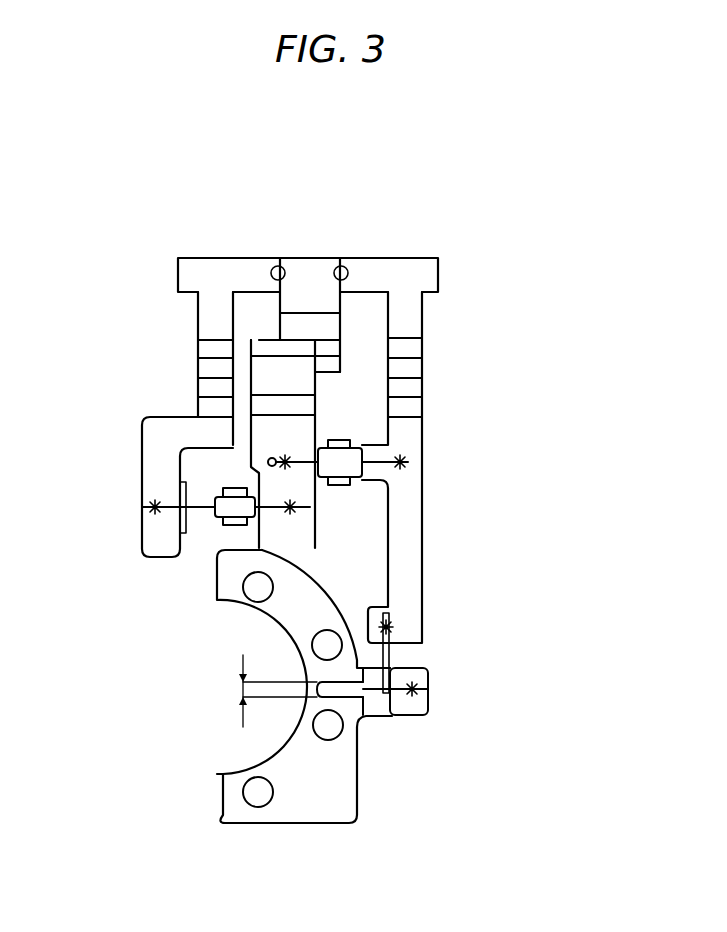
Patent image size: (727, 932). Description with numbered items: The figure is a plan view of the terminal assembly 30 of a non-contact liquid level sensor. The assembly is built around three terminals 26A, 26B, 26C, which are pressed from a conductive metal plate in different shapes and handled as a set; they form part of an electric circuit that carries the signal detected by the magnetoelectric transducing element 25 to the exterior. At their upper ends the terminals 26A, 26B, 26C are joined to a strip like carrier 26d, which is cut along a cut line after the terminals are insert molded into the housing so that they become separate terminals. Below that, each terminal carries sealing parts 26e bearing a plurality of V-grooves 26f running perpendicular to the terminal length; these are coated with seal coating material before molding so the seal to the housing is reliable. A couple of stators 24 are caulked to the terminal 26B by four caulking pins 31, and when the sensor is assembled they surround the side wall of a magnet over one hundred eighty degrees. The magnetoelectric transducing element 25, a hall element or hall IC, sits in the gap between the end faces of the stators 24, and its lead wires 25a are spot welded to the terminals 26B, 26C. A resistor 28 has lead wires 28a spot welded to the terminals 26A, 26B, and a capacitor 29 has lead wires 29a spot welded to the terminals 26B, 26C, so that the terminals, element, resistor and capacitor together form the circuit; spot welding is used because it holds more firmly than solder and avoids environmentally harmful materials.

The stators 24 is at (240, 770).
The magnetoelectric transducing element 25 is at (348, 705).
The lead wires 25a is at (400, 670).
The terminal 26A is at (198, 310).
The terminal 26B is at (340, 322).
The terminal 26C is at (422, 405).
The strip like carrier 26d is at (403, 257).
The sealing parts 26e is at (403, 385).
The V-grooves 26f is at (278, 412).
The resistor 28 is at (212, 492).
The lead wires 28a is at (203, 512).
The capacitor 29 is at (343, 440).
The lead wires 29a is at (402, 468).
The terminal assembly 30 is at (540, 273).
The caulking pins 31 is at (217, 578).